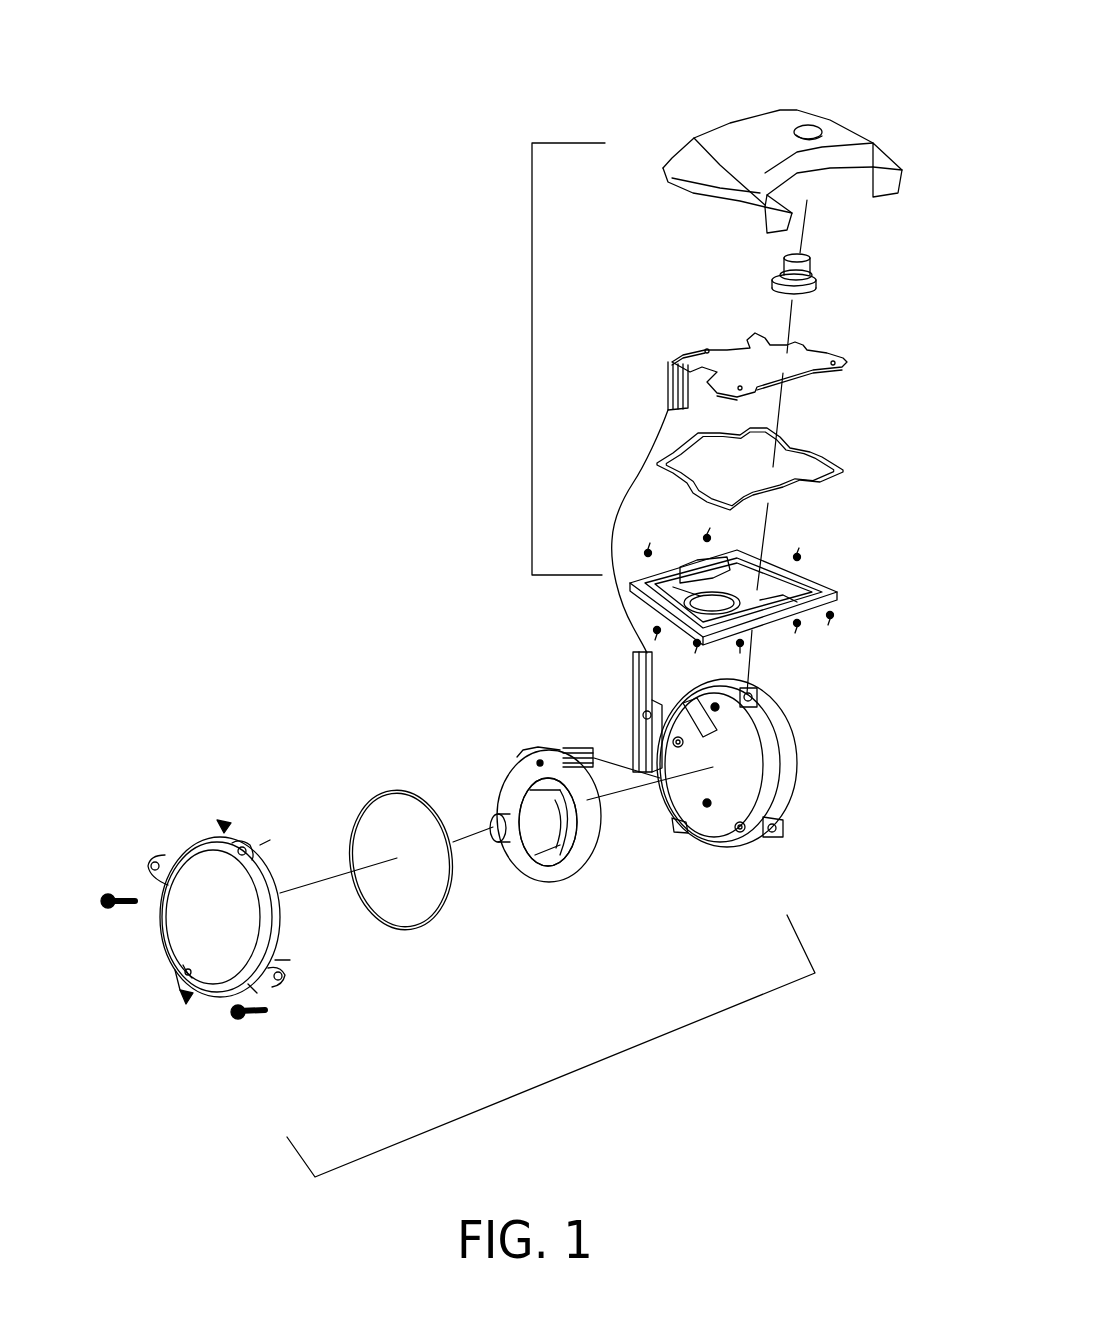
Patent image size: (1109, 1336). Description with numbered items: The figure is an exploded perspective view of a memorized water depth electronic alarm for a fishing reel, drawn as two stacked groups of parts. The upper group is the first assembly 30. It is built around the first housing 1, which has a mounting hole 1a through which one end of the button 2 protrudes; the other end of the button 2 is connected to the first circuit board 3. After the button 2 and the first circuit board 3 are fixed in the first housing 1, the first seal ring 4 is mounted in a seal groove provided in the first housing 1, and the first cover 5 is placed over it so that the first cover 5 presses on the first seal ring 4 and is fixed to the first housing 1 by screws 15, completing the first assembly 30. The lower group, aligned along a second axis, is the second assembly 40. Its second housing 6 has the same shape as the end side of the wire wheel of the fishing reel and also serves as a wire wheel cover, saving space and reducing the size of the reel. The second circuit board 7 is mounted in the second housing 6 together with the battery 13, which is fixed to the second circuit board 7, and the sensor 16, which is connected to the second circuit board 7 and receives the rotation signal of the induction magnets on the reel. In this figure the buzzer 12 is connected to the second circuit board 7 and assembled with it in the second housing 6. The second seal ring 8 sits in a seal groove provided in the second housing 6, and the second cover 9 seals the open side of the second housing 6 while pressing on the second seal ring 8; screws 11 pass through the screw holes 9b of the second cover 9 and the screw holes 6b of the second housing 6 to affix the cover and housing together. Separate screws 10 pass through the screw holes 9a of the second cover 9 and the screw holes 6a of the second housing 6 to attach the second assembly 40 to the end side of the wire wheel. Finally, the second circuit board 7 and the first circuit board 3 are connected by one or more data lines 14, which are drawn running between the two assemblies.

The first housing 1 is at (900, 180).
The mounting hole 1a is at (820, 128).
The button 2 is at (815, 285).
The first circuit board 3 is at (847, 362).
The first seal ring 4 is at (843, 472).
The first cover 5 is at (837, 593).
The second housing 6 is at (793, 752).
The screw holes 6a is at (773, 830).
The screw holes 6b is at (680, 823).
The second circuit board 7 is at (567, 880).
The second seal ring 8 is at (423, 930).
The second cover 9 is at (215, 990).
The screw holes 9a is at (148, 862).
The screw holes 9b is at (247, 845).
The screws 10 is at (108, 907).
The screws 11 is at (223, 825).
The buzzer 12 is at (530, 822).
The battery 13 is at (530, 803).
The data lines 14 is at (637, 673).
The screws 15 is at (707, 538).
The sensor 16 is at (518, 775).
The first assembly 30 is at (542, 359).
The second assembly 40 is at (551, 1046).